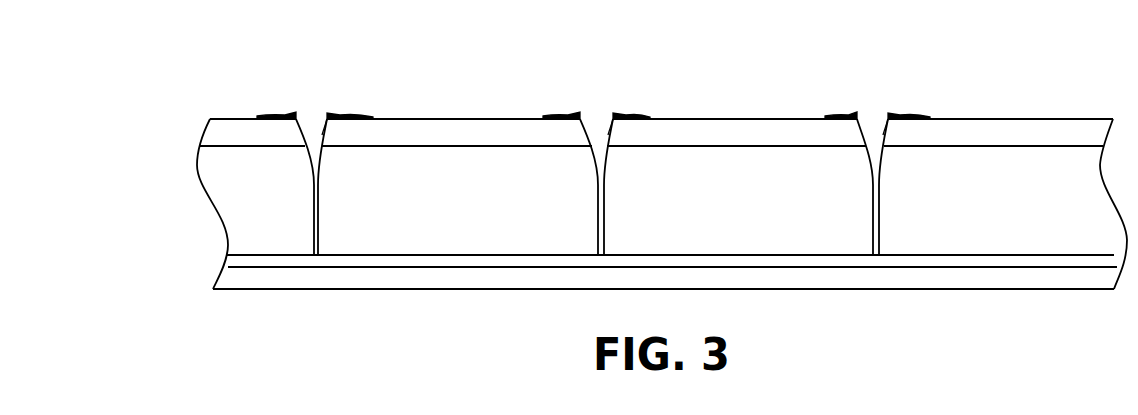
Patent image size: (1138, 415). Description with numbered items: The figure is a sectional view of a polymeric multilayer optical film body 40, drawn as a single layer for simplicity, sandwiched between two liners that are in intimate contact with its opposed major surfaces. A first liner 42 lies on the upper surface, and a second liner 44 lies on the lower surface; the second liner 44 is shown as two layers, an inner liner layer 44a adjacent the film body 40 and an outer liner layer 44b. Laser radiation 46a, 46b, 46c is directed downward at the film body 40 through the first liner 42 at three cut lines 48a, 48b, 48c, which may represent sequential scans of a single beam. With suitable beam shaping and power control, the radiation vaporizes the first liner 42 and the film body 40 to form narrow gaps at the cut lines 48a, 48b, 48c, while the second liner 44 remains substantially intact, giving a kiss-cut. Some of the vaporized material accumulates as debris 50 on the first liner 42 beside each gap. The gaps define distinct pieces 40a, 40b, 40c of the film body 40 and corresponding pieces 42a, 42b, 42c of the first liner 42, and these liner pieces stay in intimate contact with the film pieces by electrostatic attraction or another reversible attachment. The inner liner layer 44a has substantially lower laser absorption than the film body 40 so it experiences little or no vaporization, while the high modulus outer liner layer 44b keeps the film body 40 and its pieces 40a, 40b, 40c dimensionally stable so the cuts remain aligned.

The polymeric multilayer optical film body 40 is at (230, 209).
The piece of multilayer film body 40a is at (450, 206).
The piece of multilayer film body 40b is at (730, 206).
The piece of multilayer film body 40c is at (1005, 204).
The first liner 42 is at (623, 103).
The piece of first liner 42a is at (418, 130).
The piece of first liner 42b is at (698, 130).
The piece of first liner 42c is at (977, 130).
The second liner 44 is at (602, 270).
The liner layer 44a is at (230, 262).
The liner layer 44b is at (228, 283).
The laser radiation 46a is at (312, 100).
The laser radiation 46b is at (597, 100).
The laser radiation 46c is at (874, 100).
The cut line 48a is at (330, 106).
The cut line 48b is at (614, 103).
The cut line 48c is at (891, 102).
The debris 50 is at (278, 116).